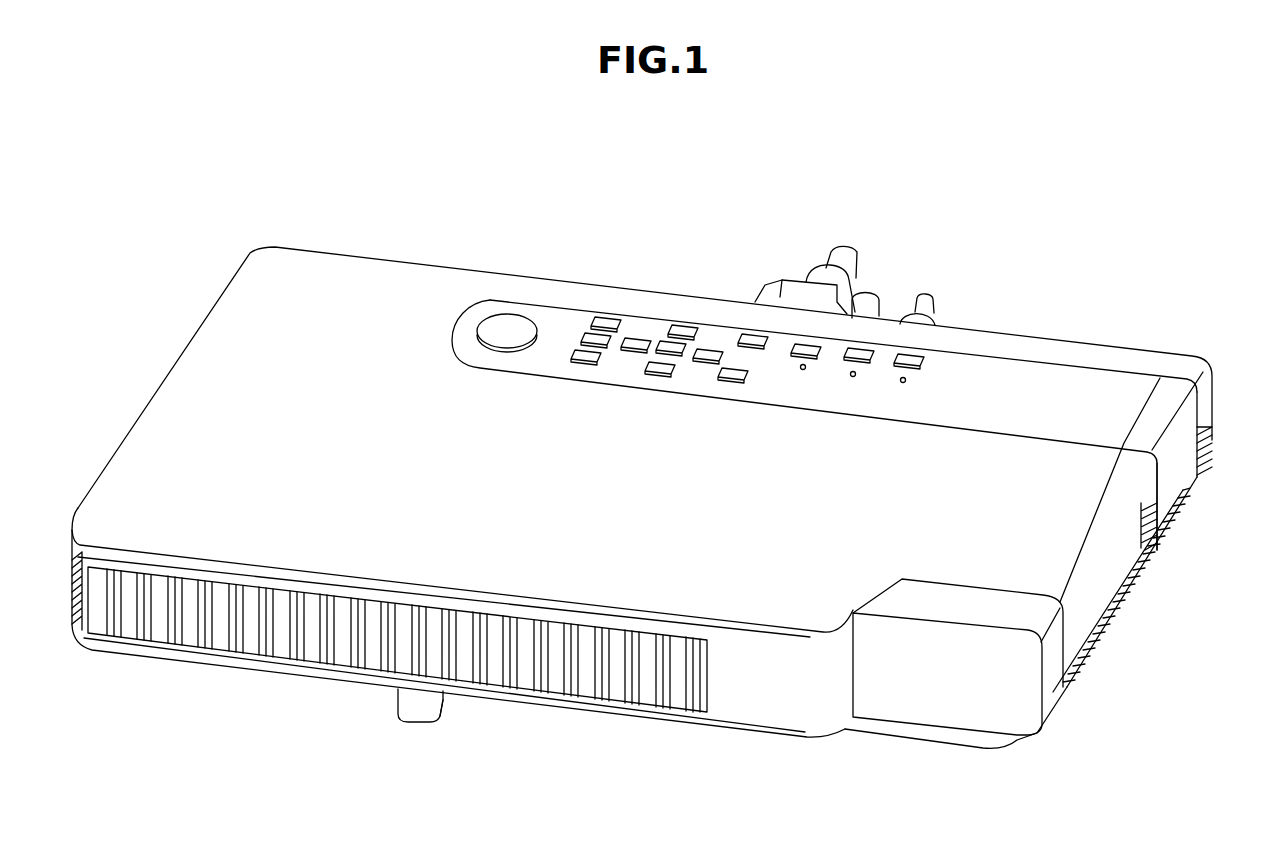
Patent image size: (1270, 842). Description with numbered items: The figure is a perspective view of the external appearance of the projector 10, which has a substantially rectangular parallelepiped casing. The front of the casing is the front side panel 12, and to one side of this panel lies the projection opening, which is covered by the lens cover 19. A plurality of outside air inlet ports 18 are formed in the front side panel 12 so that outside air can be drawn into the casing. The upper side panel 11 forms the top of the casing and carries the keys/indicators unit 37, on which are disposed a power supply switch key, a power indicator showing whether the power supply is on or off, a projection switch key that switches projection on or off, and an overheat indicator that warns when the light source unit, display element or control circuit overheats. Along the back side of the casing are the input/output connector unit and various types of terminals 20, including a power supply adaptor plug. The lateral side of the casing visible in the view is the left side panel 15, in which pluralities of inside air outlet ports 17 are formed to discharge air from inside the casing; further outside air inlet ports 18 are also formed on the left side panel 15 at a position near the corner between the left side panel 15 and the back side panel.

The projector 10 is at (722, 158).
The upper side panel 11 is at (408, 278).
The front side panel 12 is at (742, 683).
The left side panel 15 is at (1097, 572).
The inside air outlet ports 17 is at (1113, 617).
The outside air inlet ports 18 is at (640, 700).
The lens cover 19 is at (953, 693).
The terminals 20 is at (882, 268).
The keys/indicators unit 37 is at (646, 310).